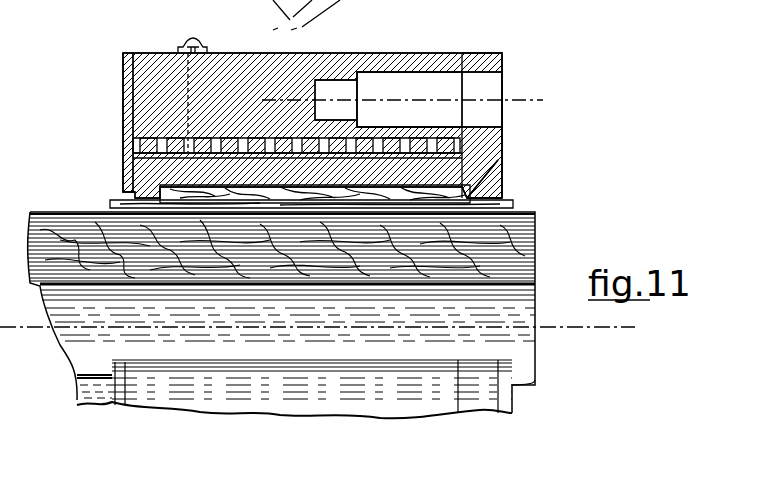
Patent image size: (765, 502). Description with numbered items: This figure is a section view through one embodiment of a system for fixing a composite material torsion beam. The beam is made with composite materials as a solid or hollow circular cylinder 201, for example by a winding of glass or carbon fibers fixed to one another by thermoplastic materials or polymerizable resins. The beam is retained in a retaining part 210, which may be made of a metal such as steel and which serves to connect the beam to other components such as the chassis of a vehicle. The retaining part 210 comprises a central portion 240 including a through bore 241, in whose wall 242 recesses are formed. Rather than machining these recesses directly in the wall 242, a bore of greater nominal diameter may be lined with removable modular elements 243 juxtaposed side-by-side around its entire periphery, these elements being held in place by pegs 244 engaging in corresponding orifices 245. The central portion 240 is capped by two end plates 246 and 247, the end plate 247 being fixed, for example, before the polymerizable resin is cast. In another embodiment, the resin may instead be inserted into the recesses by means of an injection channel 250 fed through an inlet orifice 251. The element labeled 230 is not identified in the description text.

The hollow circular cylinder 201 is at (535, 267).
The retaining part 210 is at (177, 72).
The actuating member 230 is at (290, 24).
The central portion 240 is at (390, 35).
The through bore 241 is at (503, 173).
The wall 242 is at (500, 146).
The removable modular elements 243 is at (125, 178).
The pegs 244 is at (125, 153).
The orifices 245 is at (173, 138).
The end plate 246 is at (128, 72).
The end plate 247 is at (502, 57).
The injection channel 250 is at (188, 98).
The inlet orifice 251 is at (196, 41).